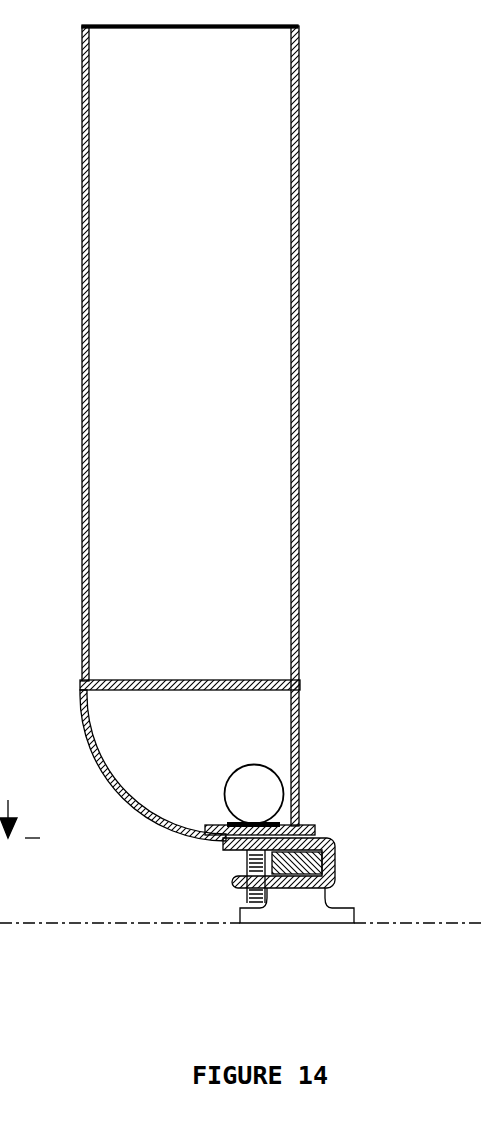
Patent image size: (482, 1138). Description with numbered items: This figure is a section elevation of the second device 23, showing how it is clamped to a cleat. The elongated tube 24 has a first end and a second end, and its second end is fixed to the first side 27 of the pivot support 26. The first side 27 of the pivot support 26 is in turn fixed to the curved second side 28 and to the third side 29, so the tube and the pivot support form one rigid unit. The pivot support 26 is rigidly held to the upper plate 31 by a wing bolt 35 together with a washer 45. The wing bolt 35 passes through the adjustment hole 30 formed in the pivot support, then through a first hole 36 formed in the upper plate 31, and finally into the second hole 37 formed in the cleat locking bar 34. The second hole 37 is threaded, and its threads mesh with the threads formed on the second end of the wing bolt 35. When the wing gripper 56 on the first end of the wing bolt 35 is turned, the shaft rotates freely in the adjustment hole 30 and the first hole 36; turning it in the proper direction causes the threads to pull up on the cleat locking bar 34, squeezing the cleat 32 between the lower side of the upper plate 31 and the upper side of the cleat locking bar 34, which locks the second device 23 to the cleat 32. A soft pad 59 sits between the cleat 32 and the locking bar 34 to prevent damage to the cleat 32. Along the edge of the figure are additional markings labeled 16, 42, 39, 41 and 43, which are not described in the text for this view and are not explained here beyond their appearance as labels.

The second device 23 is at (83, 130).
The elongated tube 24 is at (83, 240).
The pivot support 26 is at (302, 745).
The wing gripper 56 is at (302, 770).
The first side 27 is at (150, 679).
The curved second side 28 is at (143, 817).
The washer 45 is at (257, 818).
The adjustment hole 30 is at (227, 827).
The third side 29 is at (303, 800).
The upper plate 31 is at (323, 838).
The first hole 36 is at (230, 842).
The cleat 32 is at (322, 868).
The wing bolt 35 is at (247, 860).
The second hole 37 is at (245, 883).
The cleat locking bar 34 is at (238, 880).
The soft pad 59 is at (303, 888).
The direction arrow 16 is at (20, 810).
The element 42 is at (0, 866).
The element 39 is at (0, 888).
The element 41 is at (0, 910).
The element 43 is at (0, 932).